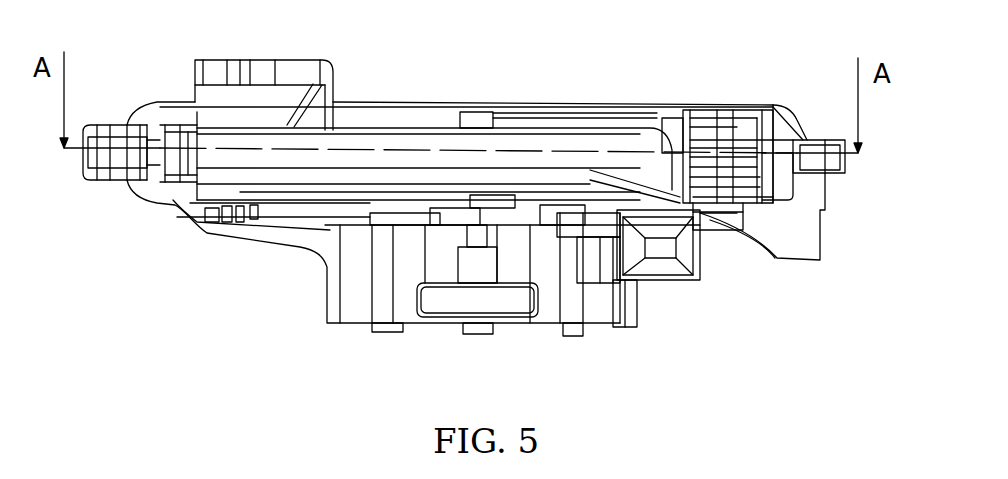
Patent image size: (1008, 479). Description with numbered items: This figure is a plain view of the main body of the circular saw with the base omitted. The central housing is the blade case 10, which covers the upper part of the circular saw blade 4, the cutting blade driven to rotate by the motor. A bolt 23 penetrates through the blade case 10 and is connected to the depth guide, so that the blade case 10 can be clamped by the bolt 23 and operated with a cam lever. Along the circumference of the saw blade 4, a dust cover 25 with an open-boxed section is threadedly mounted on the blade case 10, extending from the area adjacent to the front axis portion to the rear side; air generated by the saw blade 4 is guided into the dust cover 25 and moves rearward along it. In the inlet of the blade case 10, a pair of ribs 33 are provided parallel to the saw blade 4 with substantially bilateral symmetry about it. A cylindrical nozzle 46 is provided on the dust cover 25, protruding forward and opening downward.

The circular saw blade 4 is at (681, 130).
The blade case 10 is at (355, 320).
The bolt 23 is at (84, 187).
The dust cover 25 is at (571, 140).
The ribs 33 is at (738, 147).
The cylindrical nozzle 46 is at (811, 143).